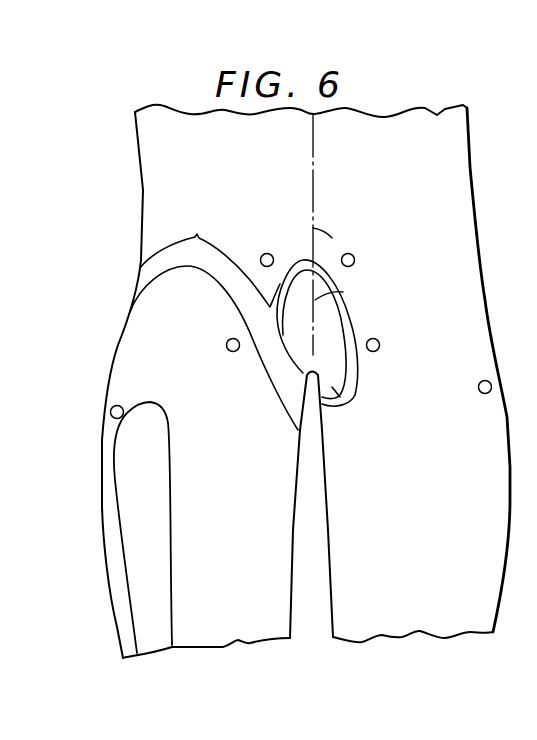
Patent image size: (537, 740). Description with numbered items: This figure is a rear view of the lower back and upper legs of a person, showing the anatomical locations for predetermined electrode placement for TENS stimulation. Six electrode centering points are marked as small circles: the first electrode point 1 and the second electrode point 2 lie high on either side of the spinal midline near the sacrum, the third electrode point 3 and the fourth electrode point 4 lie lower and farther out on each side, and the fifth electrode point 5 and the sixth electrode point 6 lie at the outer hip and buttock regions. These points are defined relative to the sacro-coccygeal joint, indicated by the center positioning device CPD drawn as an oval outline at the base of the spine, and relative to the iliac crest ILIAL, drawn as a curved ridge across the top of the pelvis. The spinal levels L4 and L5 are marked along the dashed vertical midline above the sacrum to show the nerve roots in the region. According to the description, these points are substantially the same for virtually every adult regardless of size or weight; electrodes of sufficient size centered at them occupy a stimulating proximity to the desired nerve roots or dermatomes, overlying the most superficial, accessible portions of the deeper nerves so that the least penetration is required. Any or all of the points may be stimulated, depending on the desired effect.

The electrode placement point PE# 1 is at (270, 253).
The electrode placement point PE# 2 is at (355, 257).
The electrode placement point PE# 3 is at (226, 346).
The electrode placement point PE# 4 is at (377, 339).
The electrode placement point PE# 5 is at (110, 413).
The electrode placement point PE# 6 is at (478, 390).
The fourth lumbar vertebra level L4 is at (318, 252).
The fifth lumbar vertebra level L5 is at (313, 273).
The iliac crest ILIAL is at (193, 241).
The center positioning device CPD is at (327, 407).